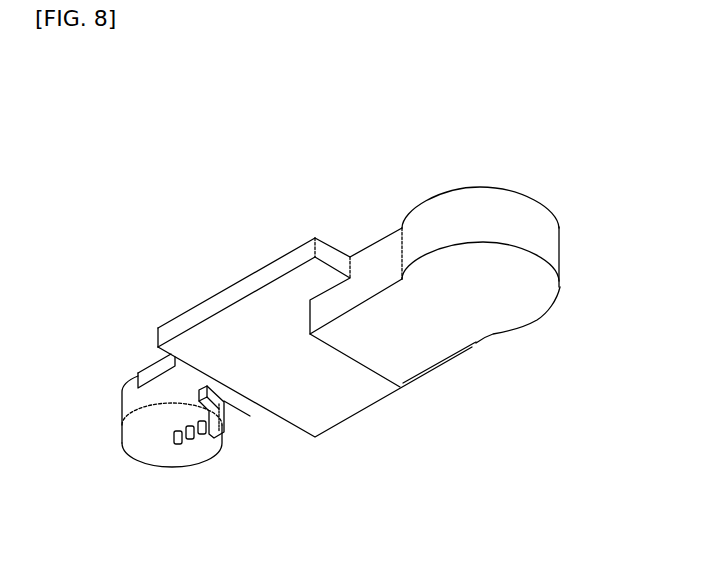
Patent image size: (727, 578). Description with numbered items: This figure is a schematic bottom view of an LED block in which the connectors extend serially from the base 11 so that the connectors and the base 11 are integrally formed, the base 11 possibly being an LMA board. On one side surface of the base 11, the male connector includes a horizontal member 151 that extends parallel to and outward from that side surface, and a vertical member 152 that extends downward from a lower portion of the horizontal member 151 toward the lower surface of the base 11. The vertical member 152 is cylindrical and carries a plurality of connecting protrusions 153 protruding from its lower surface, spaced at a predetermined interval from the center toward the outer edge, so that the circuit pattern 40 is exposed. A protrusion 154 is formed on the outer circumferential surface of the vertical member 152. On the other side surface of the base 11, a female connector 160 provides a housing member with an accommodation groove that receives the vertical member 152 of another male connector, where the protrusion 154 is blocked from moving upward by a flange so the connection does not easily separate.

The base 11 is at (252, 283).
The female connector 160 is at (528, 229).
The vertical member 152 is at (131, 403).
The horizontal member 151 is at (149, 372).
The protrusion 154 is at (235, 403).
The connecting protrusions 153 is at (178, 444).
The circuit pattern 40 is at (207, 440).